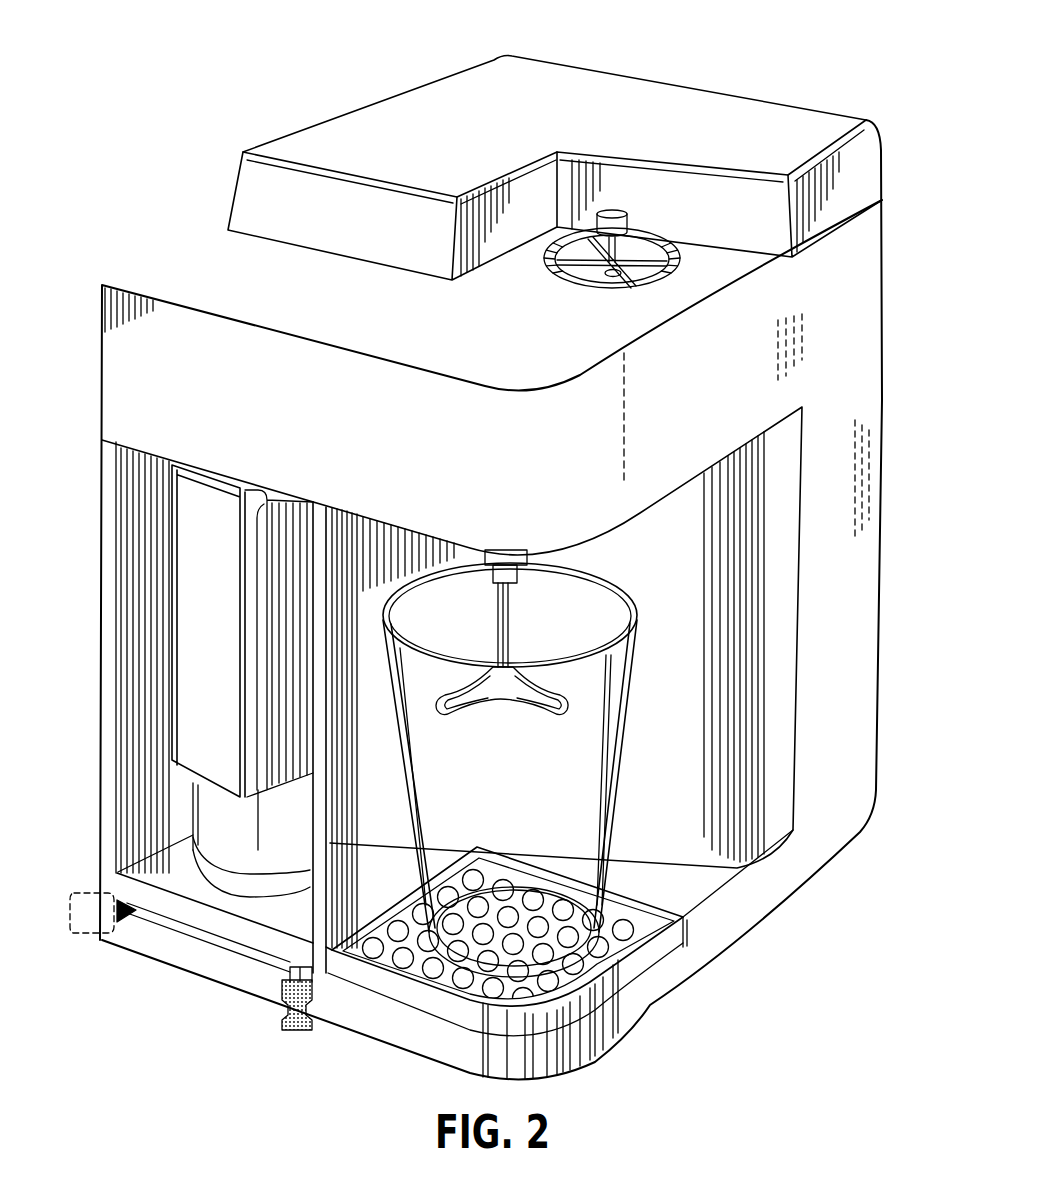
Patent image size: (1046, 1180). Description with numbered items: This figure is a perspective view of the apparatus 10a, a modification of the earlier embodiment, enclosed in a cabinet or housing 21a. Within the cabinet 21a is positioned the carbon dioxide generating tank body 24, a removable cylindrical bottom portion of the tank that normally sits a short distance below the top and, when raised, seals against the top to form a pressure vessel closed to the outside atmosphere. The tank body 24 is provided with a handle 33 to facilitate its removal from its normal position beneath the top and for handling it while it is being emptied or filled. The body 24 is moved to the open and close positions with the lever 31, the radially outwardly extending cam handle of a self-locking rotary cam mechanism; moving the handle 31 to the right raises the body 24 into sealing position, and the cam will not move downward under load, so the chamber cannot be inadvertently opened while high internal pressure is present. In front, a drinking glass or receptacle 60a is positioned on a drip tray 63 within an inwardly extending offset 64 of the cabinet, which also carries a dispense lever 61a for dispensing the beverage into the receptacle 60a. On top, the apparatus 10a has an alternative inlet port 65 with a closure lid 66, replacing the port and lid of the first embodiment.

The apparatus 10a is at (658, 67).
The cabinet or housing 21a is at (183, 260).
The inlet port 65 is at (650, 243).
The closure lid 66 is at (623, 277).
The handle 33 is at (190, 578).
The tank body 24 is at (220, 817).
The cam handle 31 is at (88, 936).
The inwardly extending offset 64 is at (677, 837).
The drip tray 63 is at (617, 955).
The drinking glass or receptacle 60a is at (600, 810).
The dispense lever 61a is at (567, 712).